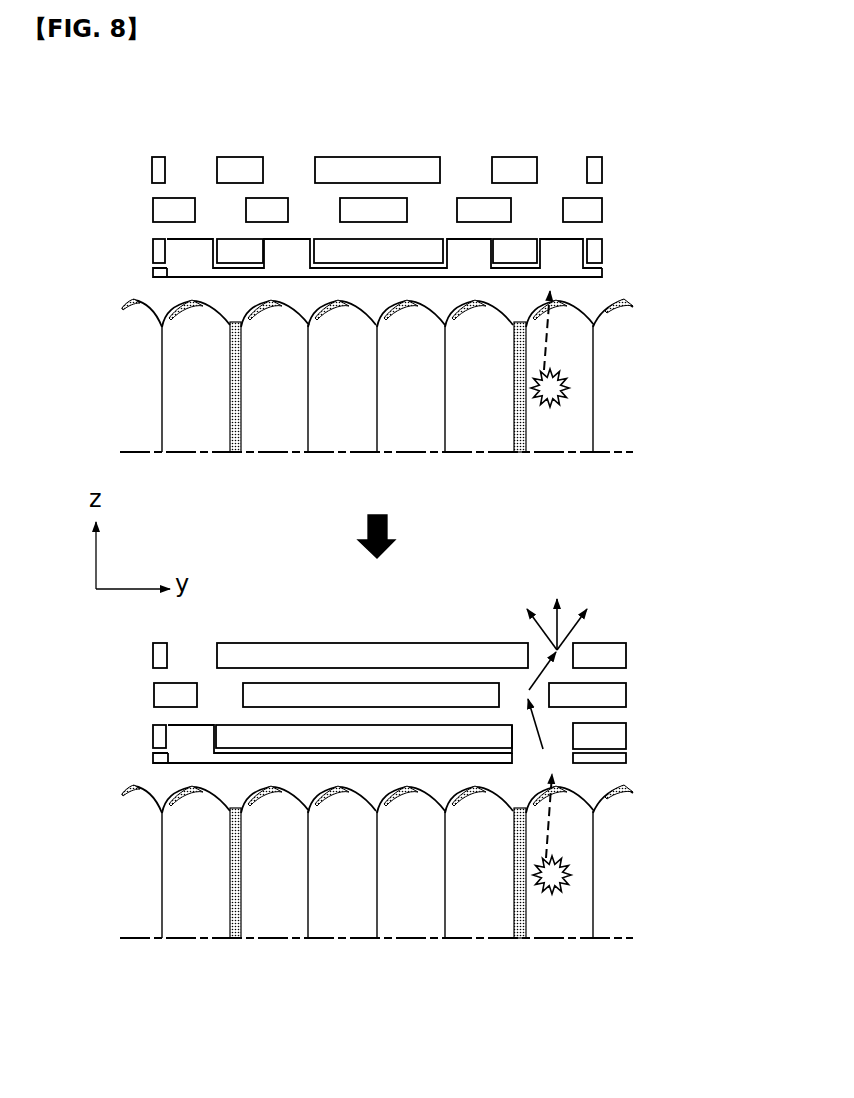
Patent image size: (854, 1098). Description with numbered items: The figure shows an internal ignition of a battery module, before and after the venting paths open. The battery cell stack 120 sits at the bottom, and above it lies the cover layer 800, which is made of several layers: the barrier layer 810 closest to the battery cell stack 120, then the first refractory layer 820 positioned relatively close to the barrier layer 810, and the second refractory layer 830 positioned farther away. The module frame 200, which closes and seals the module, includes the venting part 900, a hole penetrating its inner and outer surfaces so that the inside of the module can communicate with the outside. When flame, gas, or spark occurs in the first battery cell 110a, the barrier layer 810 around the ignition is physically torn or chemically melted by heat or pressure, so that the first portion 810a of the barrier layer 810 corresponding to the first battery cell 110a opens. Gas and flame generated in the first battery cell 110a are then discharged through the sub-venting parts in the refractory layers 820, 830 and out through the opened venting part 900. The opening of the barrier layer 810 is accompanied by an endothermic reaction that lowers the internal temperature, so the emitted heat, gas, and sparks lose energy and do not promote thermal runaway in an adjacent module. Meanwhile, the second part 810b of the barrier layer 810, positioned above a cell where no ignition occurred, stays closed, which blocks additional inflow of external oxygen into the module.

The venting part 900 is at (578, 166).
The module frame 200 is at (602, 163).
The cover layer 800 is at (408, 475).
The second refractory layer 830 is at (602, 210).
The first refractory layer 820 is at (602, 252).
The barrier layer 810 is at (382, 512).
The first portion of the barrier layer 810a is at (562, 270).
The second part of the barrier layer 810b is at (181, 264).
The first battery cell 110a is at (580, 342).
The battery cell stack 120 is at (626, 390).